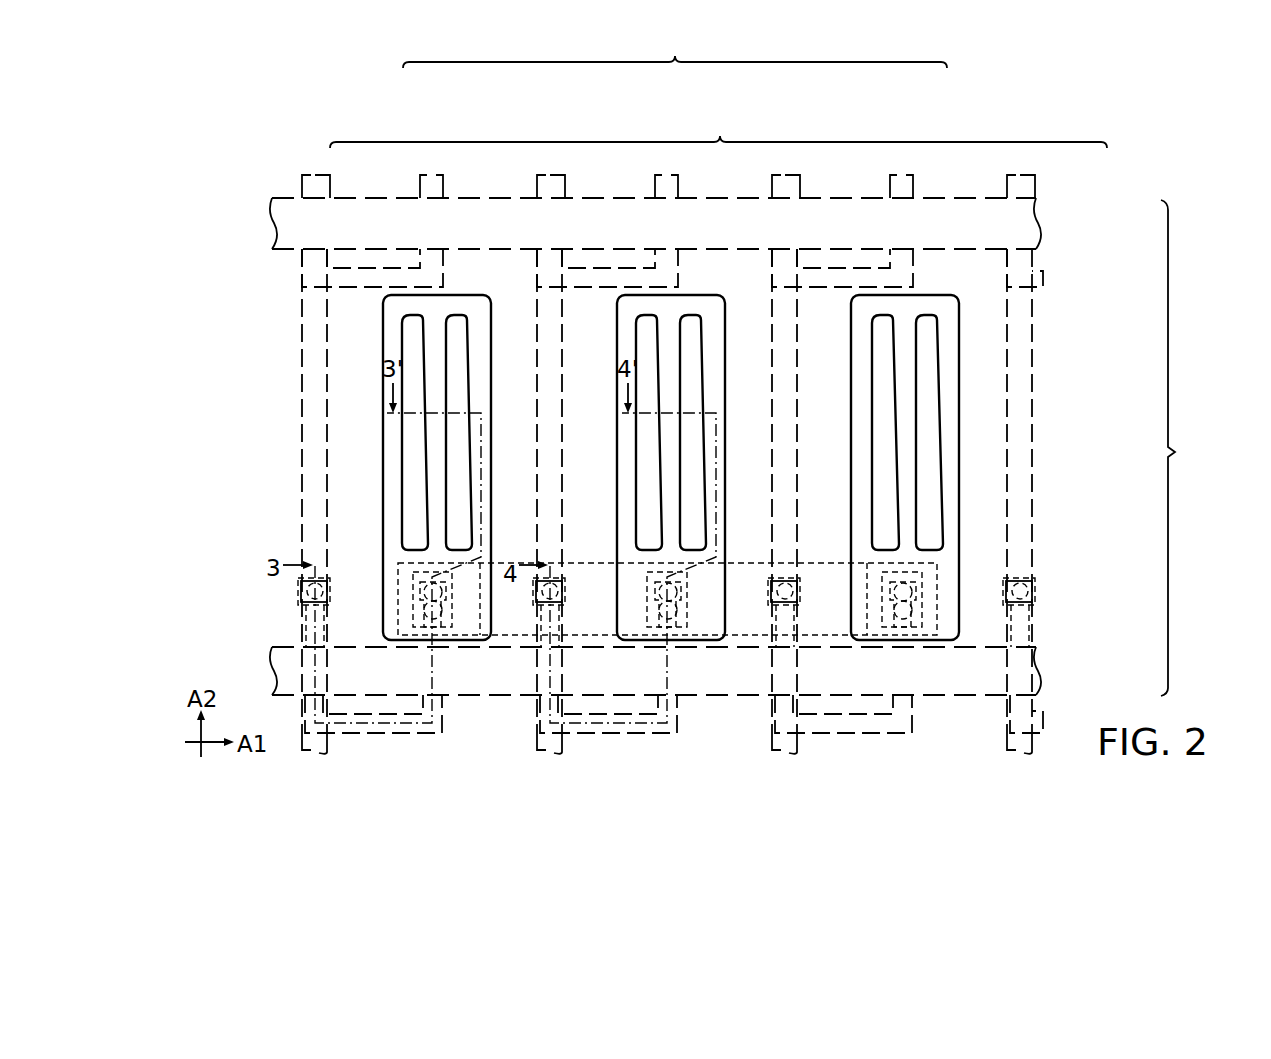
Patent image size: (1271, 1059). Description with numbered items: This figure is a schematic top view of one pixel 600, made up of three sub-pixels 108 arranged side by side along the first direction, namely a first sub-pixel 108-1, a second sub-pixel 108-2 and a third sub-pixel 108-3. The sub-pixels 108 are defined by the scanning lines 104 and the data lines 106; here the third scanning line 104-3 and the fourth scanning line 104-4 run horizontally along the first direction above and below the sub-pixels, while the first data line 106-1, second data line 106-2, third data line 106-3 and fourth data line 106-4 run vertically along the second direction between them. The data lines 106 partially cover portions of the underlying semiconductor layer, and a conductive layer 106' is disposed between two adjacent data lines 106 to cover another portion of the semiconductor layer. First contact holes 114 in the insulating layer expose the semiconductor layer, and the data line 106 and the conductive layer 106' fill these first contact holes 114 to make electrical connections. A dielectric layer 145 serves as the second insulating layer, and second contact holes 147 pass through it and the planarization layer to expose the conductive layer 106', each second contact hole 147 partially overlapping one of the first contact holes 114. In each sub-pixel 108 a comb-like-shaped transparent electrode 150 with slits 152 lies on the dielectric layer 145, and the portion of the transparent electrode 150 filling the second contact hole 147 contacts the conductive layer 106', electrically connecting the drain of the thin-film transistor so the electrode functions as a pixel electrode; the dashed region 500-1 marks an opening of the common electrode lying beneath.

The pixel 600 is at (256, 158).
The sub-pixels 108 is at (675, 48).
The first pixel 108-1 is at (435, 124).
The second sub-pixel 108-2 is at (670, 124).
The third sub-pixel 108-3 is at (905, 124).
The data lines 106 is at (718, 128).
The first data line 106-1 is at (358, 173).
The second data line 106-2 is at (593, 173).
The third data line 106-3 is at (828, 173).
The fourth data line 106-4 is at (1063, 173).
The scanning lines 104 is at (1191, 448).
The third scanning line 104-3 is at (985, 680).
The fourth scanning line 104-4 is at (985, 222).
The dielectric layer 145 is at (993, 333).
The transparent electrode 150 is at (952, 385).
The slits 152 is at (928, 425).
The conductive strip 500-1 is at (937, 566).
The conductive layer 106' is at (756, 580).
The first contact holes 114 is at (928, 588).
The second contact holes 147 is at (957, 620).